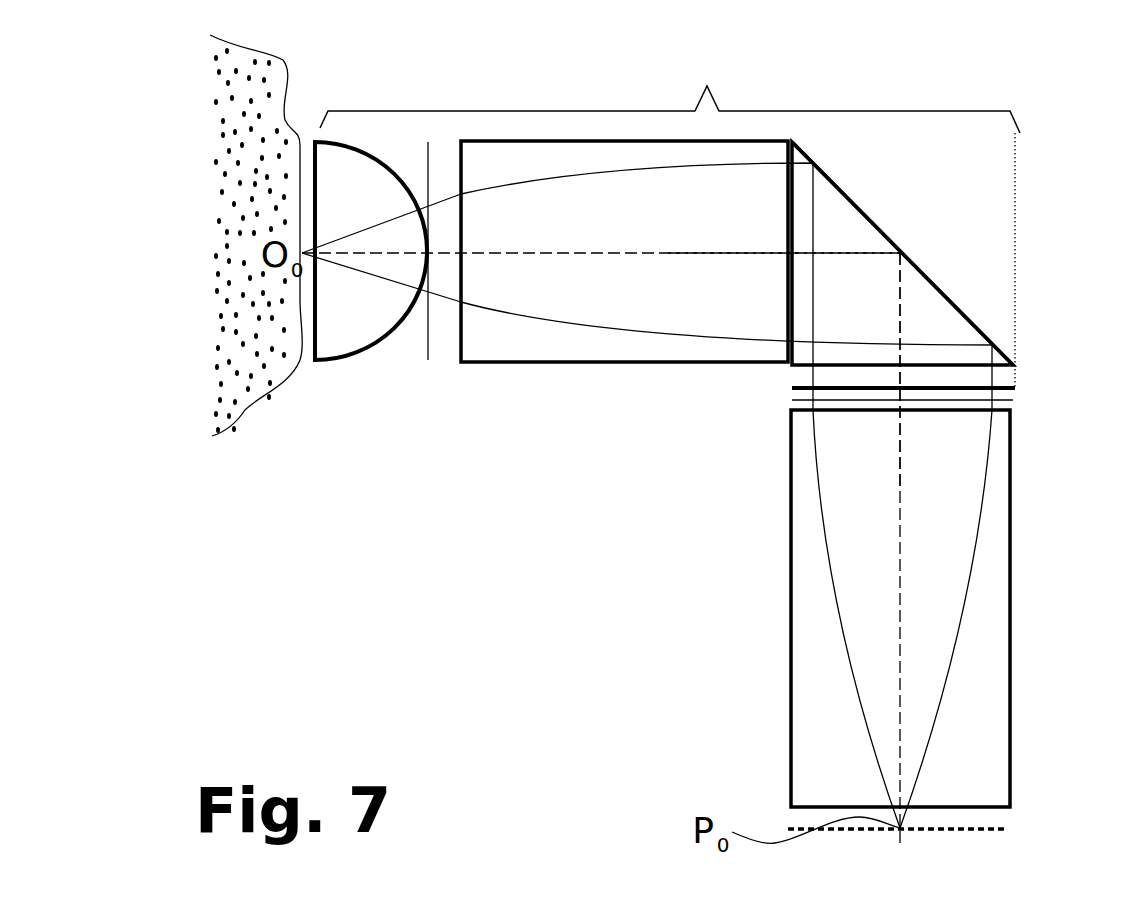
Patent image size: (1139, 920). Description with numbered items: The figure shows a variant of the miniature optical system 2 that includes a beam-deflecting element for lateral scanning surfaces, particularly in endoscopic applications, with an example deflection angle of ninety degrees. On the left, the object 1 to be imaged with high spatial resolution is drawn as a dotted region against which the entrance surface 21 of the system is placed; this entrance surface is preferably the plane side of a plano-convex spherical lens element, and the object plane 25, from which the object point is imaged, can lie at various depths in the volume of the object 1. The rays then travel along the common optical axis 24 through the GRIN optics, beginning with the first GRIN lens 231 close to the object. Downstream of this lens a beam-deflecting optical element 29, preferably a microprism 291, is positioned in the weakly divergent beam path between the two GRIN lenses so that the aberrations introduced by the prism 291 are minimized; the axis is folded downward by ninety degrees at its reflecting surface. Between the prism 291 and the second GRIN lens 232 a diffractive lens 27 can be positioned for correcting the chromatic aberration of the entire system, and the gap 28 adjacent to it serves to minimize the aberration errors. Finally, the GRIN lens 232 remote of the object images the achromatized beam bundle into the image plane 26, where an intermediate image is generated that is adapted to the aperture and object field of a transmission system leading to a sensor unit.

The object 1 is at (300, 138).
The miniature optical system 2 is at (670, 203).
The entrance surface 21 is at (393, 190).
The optical axis 24 is at (668, 253).
The object plane 25 is at (325, 363).
The image plane 26 is at (785, 827).
The diffractive lens 27 is at (1002, 398).
The gap 28 is at (443, 347).
The beam-deflecting optical element 29 is at (953, 252).
The microprism 291 is at (940, 275).
The first GRIN lens 231 is at (578, 348).
The second GRIN lens 232 is at (998, 656).